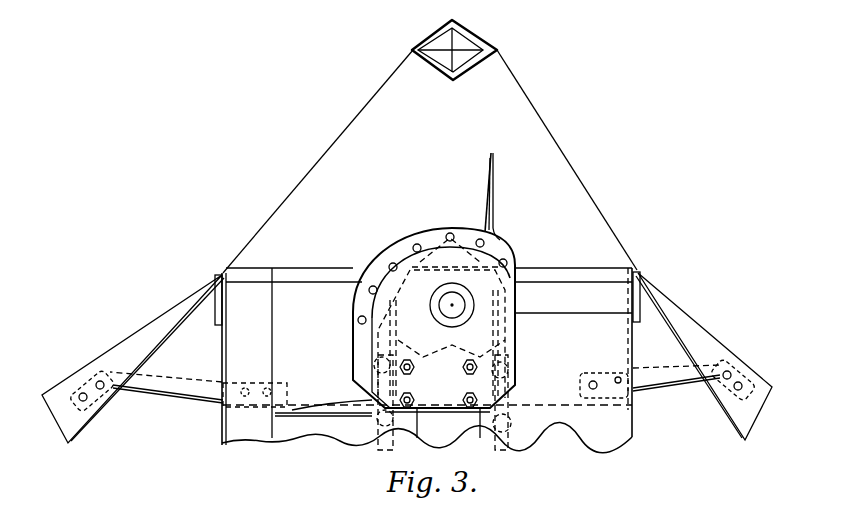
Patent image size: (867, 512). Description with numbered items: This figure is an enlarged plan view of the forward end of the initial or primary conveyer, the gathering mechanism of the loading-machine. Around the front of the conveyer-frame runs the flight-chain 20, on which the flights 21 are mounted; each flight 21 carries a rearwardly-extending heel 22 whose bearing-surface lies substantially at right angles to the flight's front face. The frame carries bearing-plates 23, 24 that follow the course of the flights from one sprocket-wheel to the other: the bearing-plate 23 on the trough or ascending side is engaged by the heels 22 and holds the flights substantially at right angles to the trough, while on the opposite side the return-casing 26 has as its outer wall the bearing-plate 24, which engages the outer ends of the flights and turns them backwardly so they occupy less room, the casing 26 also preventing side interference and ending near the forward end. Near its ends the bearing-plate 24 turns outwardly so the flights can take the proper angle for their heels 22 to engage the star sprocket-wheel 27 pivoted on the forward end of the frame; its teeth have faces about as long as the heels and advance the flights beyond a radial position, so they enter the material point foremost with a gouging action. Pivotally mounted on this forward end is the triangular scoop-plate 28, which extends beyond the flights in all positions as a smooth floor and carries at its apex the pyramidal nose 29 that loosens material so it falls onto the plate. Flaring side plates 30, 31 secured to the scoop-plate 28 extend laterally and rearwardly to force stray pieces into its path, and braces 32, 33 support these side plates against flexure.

The flight-chain 20 is at (503, 405).
The flight 21 is at (492, 207).
The heel 22 is at (513, 258).
The bearing-plate 23 is at (393, 422).
The bearing-plate 24 is at (628, 403).
The return-casing 26 is at (427, 434).
The star sprocket-wheel 27 is at (447, 250).
The scoop-plate 28 is at (430, 161).
The pyramidal projection or nose 29 is at (467, 43).
The flaring side plate 30 is at (700, 333).
The flaring side plate 31 is at (123, 348).
The brace 32 is at (650, 378).
The brace 33 is at (173, 388).